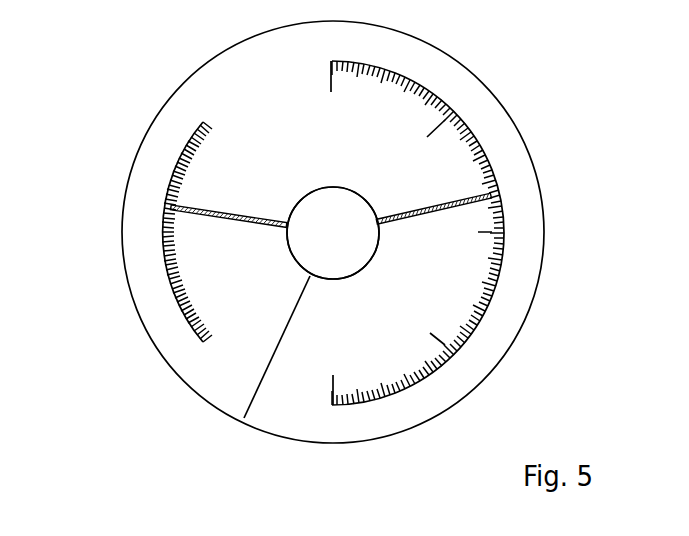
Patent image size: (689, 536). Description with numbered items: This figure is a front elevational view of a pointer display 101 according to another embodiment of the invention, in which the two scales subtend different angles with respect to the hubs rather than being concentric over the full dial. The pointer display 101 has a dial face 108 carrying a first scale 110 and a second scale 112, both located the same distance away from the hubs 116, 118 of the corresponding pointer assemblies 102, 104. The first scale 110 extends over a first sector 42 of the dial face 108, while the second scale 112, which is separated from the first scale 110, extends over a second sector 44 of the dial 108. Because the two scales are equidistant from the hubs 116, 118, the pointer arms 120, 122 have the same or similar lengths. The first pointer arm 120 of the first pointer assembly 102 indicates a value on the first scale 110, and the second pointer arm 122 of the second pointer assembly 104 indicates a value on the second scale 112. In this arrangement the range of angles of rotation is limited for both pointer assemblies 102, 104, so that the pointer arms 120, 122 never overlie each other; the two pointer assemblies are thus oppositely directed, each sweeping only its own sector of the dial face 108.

The pointer display 101 is at (152, 422).
The first sector 42 is at (493, 362).
The second sector 44 is at (153, 148).
The first pointer assembly 102 is at (392, 211).
The second pointer assembly 104 is at (268, 218).
The dial face 108 is at (281, 412).
The first scale 110 is at (480, 152).
The second scale 112 is at (170, 288).
The hub 116 is at (300, 190).
The hub 118 is at (322, 180).
The first pointer arm 120 is at (443, 208).
The second pointer arm 122 is at (191, 212).